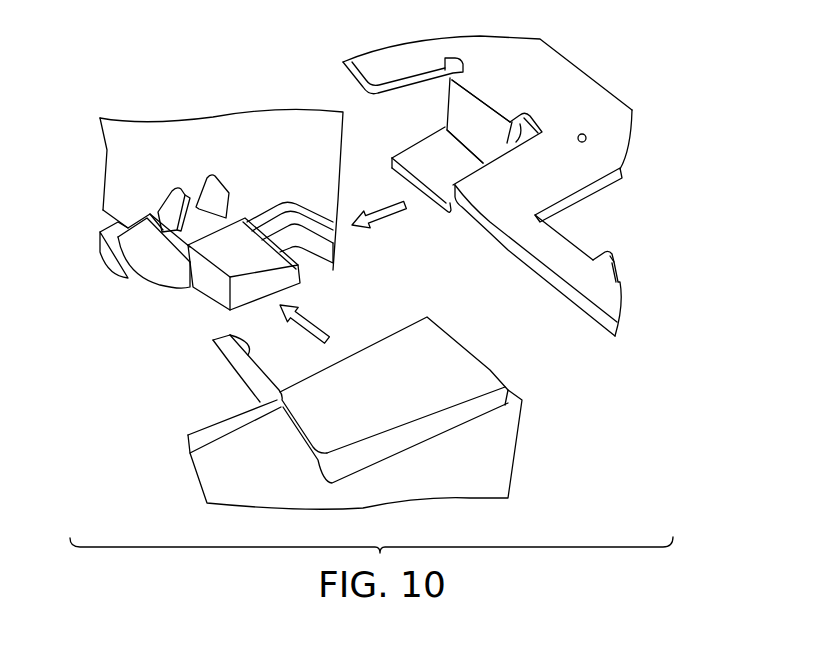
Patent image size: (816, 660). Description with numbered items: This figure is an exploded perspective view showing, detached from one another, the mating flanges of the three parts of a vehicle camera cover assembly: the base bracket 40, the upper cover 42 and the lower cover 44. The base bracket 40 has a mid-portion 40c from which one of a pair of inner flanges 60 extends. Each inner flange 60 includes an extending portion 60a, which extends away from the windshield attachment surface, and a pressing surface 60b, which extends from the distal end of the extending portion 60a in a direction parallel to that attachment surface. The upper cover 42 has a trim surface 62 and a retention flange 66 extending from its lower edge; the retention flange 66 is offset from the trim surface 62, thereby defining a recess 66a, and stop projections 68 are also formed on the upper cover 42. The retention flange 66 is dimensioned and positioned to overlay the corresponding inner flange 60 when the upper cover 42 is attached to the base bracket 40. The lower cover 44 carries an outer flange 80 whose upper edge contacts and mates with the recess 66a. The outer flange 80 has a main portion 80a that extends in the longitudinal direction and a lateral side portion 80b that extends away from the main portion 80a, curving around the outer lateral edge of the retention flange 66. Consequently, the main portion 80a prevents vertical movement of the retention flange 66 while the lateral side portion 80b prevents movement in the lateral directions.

The base bracket 40 is at (512, 169).
The mid-portion 40c is at (608, 90).
The upper cover 42 is at (216, 201).
The lower cover 44 is at (210, 420).
The inner flange 60 is at (440, 170).
The extending portion 60a is at (470, 115).
The pressing surface 60b is at (430, 208).
The trim surface 62 is at (108, 248).
The retention flange 66 is at (290, 277).
The recess 66a is at (155, 277).
The stop projection 68 is at (208, 190).
The outer flange 80 is at (360, 383).
The main portion 80a is at (383, 362).
The lateral side portion 80b is at (252, 375).